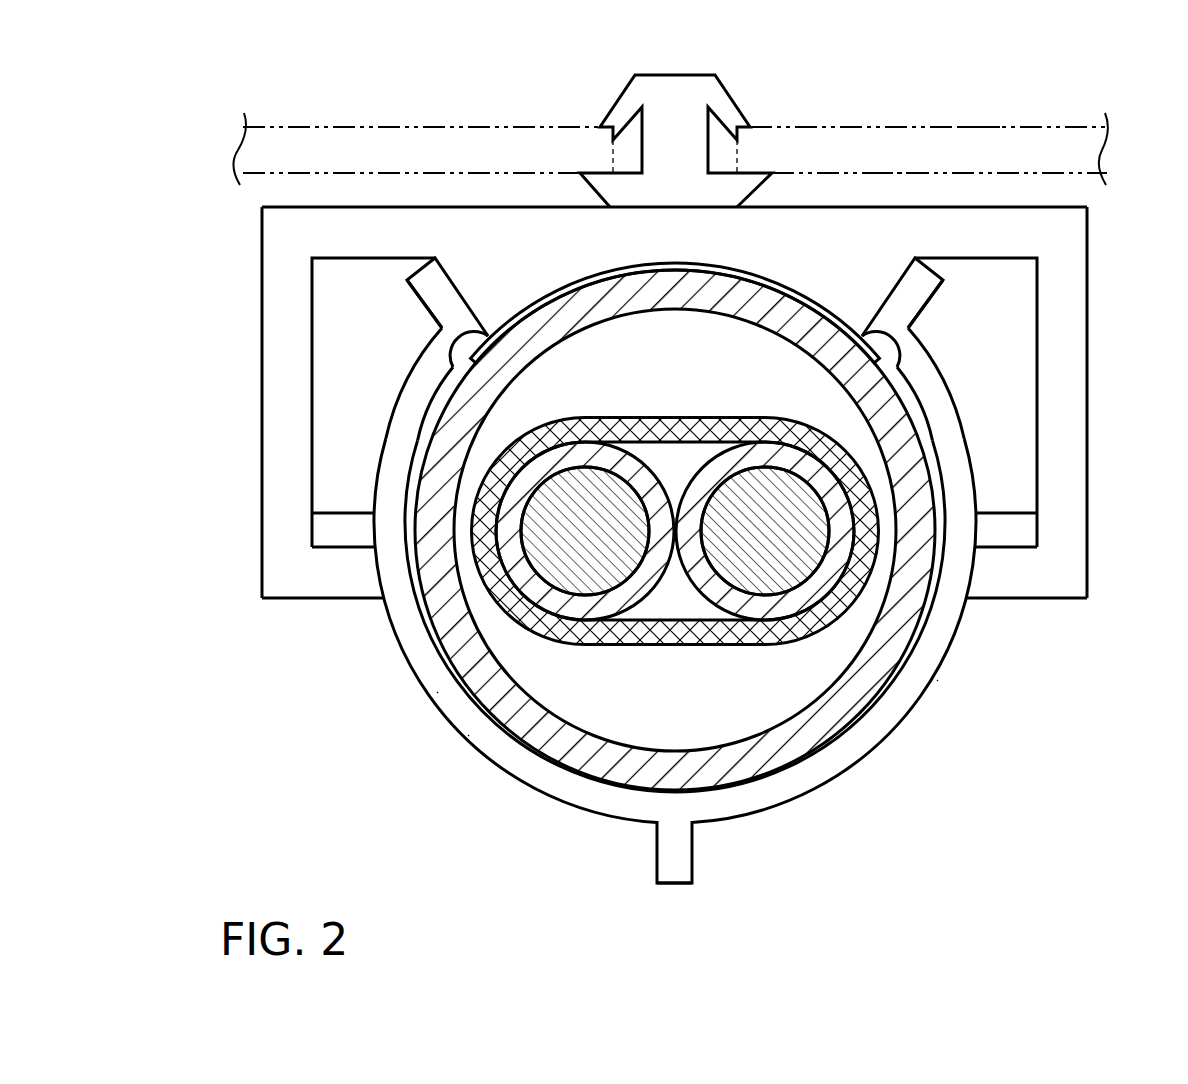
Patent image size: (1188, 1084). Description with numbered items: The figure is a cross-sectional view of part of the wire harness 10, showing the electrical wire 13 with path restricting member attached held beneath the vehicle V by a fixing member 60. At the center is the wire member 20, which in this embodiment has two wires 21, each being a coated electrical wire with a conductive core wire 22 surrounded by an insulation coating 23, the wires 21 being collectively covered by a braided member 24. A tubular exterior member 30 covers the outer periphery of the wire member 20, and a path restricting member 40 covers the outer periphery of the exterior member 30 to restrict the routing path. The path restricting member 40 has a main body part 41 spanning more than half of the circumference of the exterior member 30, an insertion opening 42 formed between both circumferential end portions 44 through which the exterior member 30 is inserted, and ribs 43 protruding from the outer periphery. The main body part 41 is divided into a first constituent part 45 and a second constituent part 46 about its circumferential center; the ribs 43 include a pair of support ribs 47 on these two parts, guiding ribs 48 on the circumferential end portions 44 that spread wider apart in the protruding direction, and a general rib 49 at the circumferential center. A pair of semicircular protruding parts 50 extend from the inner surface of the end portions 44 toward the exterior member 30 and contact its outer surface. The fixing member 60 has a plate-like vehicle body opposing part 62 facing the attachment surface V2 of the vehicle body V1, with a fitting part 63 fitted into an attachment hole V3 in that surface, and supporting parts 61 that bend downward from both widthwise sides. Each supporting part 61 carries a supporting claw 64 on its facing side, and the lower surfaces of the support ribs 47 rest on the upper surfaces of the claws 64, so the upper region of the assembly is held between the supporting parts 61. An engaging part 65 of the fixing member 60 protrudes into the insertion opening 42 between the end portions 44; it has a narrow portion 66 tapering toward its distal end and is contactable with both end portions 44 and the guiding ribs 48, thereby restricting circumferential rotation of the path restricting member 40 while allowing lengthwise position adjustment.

The wire harness 10 is at (1115, 237).
The electrical wire with path restricting member attached 13 is at (940, 681).
The wire member 20 is at (676, 660).
The electrical wire 21 is at (702, 463).
The core wire 22 is at (588, 487).
The insulation coating 23 is at (664, 445).
The braided member 24 is at (742, 430).
The exterior member 30 is at (877, 702).
The path restricting member 40 is at (853, 770).
The main body part 41 is at (468, 735).
The insertion opening 42 is at (492, 320).
The ribs 43 is at (443, 294).
The circumferential end portions 44 is at (486, 330).
The first constituent part 45 is at (940, 642).
The second constituent part 46 is at (437, 692).
The support ribs 47 is at (312, 528).
The guiding ribs 48 is at (430, 270).
The general rib 49 is at (668, 862).
The protruding parts 50 is at (492, 362).
The fixing member 60 is at (1088, 320).
The supporting parts 61 is at (1088, 365).
The vehicle body opposing part 62 is at (820, 207).
The fitting part 63 is at (633, 107).
The supporting claw 64 is at (337, 585).
The engaging part 65 is at (438, 322).
The narrow portion 66 is at (908, 322).
The vehicle V is at (1042, 127).
The vehicle body V1 is at (975, 127).
The attachment surface V2 is at (876, 172).
The attachment hole V3 is at (735, 160).